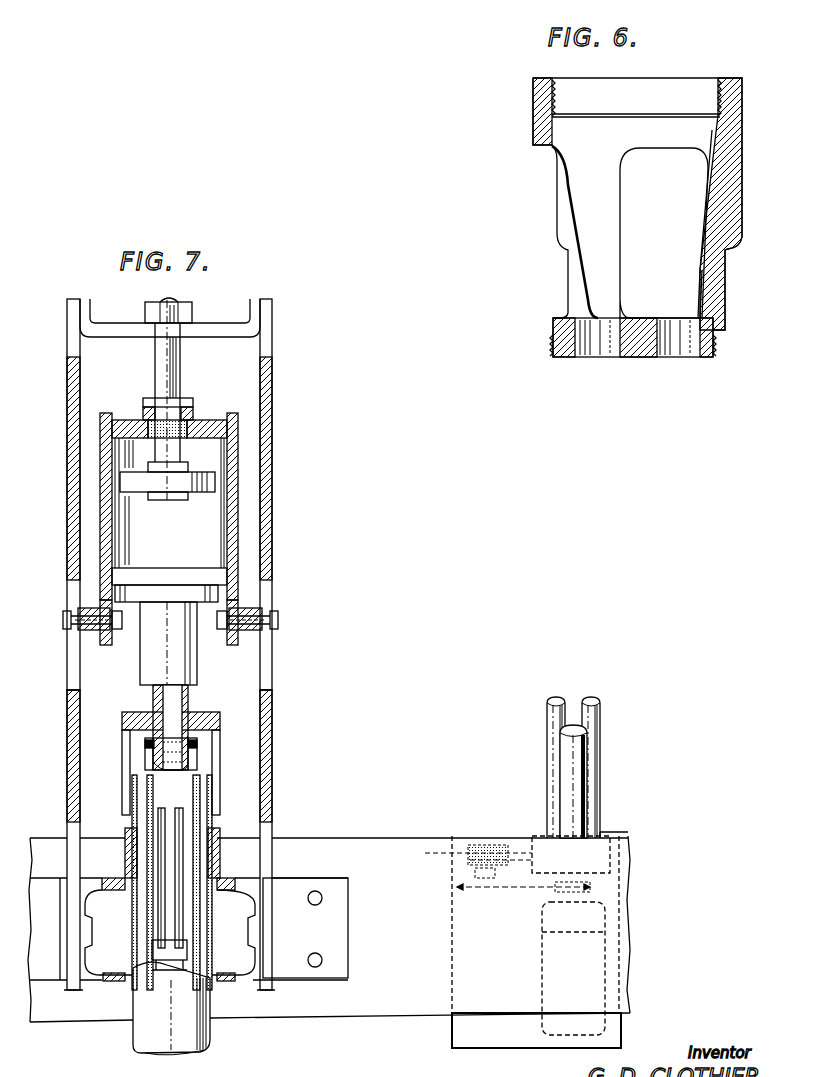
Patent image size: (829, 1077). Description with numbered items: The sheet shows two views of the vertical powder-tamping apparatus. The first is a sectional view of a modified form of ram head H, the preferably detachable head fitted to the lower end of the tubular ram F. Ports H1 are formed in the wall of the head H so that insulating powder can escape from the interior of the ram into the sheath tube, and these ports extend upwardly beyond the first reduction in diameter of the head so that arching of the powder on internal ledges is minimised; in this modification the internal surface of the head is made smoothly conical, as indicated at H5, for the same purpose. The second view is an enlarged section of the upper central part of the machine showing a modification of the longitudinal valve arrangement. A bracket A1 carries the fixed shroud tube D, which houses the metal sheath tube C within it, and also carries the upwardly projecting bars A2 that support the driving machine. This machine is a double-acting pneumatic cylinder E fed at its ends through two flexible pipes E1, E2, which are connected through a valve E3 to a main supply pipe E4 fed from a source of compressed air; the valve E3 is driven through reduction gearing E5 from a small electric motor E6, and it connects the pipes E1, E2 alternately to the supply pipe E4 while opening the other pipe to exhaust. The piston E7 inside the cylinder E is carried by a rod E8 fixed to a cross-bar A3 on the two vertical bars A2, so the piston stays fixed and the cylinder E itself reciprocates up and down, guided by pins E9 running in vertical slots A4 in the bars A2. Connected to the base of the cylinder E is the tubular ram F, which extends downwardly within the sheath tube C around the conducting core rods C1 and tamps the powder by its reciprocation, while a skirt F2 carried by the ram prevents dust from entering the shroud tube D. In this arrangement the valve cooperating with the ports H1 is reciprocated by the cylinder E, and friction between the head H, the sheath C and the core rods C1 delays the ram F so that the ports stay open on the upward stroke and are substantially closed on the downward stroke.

In FIG. 6, the ram head H is at (540, 120).
In FIG. 6, the ports H1 is at (642, 220).
In FIG. 6, the smoothly conical internal surface H5 is at (716, 148).
In FIG. 7, the bracket A1 is at (55, 968).
In FIG. 7, the upwardly projecting bars A2 is at (298, 753).
In FIG. 7, the cross-bar A3 is at (148, 325).
In FIG. 7, the vertical slots A4 is at (290, 668).
In FIG. 7, the metal tube C is at (130, 857).
In FIG. 7, the conducting rods C1 is at (177, 835).
In FIG. 7, the shroud tube D is at (212, 1036).
In FIG. 7, the double-acting pneumatic cylinder E is at (223, 517).
In FIG. 7, the flexible pipe E1 is at (593, 703).
In FIG. 7, the flexible pipe E2 is at (553, 702).
In FIG. 7, the valve E3 is at (618, 818).
In FIG. 7, the main supply pipe E4 is at (572, 778).
In FIG. 7, the reduction gearing E5 is at (487, 836).
In FIG. 7, the small electric motor E6 is at (618, 1005).
In FIG. 7, the piston E7 is at (220, 472).
In FIG. 7, the rod E8 is at (170, 355).
In FIG. 7, the pins E9 is at (292, 612).
In FIG. 7, the tubular ram F is at (187, 753).
In FIG. 7, the skirt F2 is at (223, 737).